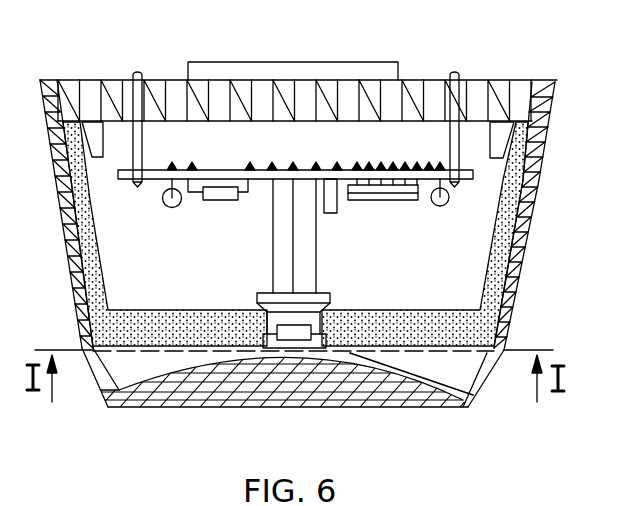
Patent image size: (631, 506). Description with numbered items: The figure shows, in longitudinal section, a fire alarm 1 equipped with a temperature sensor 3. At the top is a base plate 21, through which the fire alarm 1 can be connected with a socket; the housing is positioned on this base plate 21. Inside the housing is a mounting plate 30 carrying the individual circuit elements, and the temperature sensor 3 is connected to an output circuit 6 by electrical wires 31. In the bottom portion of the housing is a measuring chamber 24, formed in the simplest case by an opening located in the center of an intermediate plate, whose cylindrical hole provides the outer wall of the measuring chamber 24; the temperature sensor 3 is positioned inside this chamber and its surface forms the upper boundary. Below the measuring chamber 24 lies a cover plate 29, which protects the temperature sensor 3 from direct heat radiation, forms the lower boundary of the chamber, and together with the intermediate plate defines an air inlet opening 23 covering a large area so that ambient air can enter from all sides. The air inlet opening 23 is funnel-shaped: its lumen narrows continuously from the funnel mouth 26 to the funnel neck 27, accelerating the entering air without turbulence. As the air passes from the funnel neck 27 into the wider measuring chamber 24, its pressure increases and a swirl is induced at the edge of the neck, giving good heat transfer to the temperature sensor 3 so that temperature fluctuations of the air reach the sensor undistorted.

The fire alarm 1 is at (47, 44).
The base plate 21 is at (498, 98).
The mounting plate 30 is at (470, 179).
The output circuit 6 is at (360, 186).
The electrical wires 31 is at (316, 272).
The temperature sensor 3 is at (279, 315).
The measuring chamber 24 is at (218, 397).
The cover plate 29 is at (126, 402).
The funnel neck 27 is at (420, 407).
The air inlet opening 23 is at (467, 373).
The funnel mouth 26 is at (487, 373).